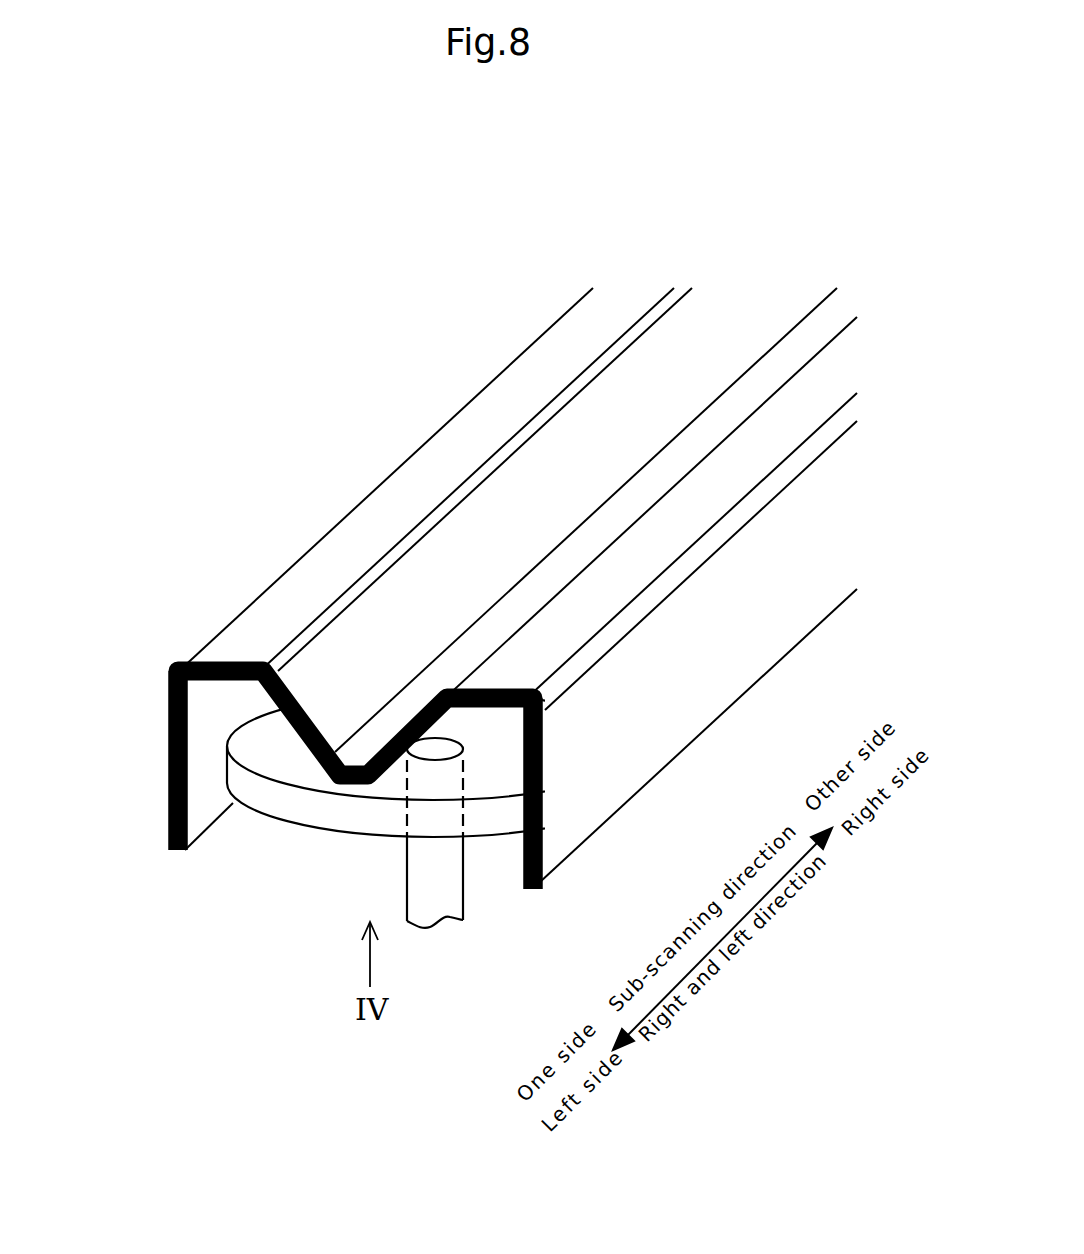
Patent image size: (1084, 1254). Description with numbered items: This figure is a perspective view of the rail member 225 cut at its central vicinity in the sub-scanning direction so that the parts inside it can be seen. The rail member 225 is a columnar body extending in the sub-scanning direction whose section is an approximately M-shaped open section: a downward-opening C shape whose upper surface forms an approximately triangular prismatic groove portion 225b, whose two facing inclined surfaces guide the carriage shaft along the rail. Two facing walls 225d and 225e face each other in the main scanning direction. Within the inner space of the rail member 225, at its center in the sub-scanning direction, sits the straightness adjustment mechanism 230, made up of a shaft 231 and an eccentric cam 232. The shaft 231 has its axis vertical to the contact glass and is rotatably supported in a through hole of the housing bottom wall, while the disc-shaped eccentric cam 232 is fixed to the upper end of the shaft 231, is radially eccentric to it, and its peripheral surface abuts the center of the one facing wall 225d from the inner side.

The rail member 225 is at (657, 760).
The groove portion 225b is at (447, 553).
The one facing wall 225d is at (545, 803).
The facing wall 225e is at (168, 738).
The straightness adjustment mechanism 230 is at (490, 903).
The shaft 231 is at (418, 862).
The eccentric cam 232 is at (262, 798).